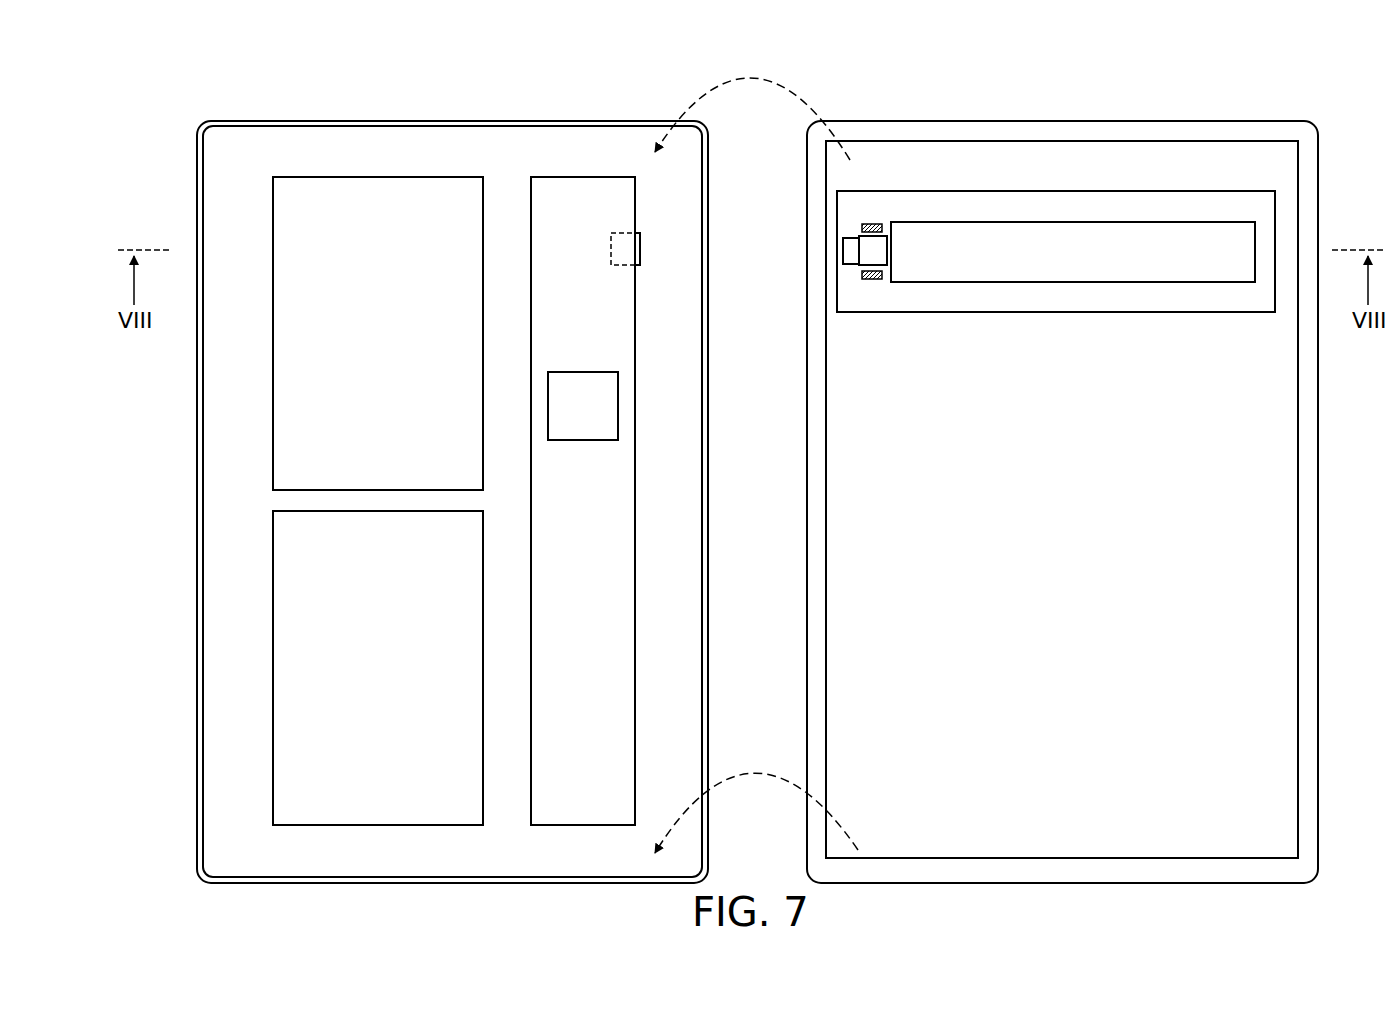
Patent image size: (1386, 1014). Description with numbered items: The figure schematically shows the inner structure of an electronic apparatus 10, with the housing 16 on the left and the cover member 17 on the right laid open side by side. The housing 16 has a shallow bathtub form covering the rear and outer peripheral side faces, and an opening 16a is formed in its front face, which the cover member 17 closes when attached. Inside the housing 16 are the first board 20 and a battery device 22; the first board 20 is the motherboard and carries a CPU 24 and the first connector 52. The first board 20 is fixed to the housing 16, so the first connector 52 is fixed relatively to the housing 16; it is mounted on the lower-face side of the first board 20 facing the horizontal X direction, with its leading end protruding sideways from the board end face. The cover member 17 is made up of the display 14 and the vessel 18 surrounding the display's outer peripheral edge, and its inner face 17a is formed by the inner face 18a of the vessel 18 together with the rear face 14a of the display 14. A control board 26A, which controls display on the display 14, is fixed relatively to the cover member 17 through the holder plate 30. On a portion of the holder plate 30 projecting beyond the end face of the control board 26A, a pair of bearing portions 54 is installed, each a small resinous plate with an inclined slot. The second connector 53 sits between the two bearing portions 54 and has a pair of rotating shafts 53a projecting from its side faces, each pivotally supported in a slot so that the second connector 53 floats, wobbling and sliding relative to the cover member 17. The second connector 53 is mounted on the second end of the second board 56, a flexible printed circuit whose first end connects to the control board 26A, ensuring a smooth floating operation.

The electronic apparatus 10 is at (150, 106).
The housing 16 is at (327, 112).
The opening 16a is at (426, 136).
The first board 20 is at (545, 176).
The battery device 22 is at (287, 522).
The CPU 24 is at (607, 410).
The first connector 52 is at (640, 241).
The cover member 17 is at (1062, 446).
The inner face of the cover member 17a is at (1062, 84).
The display 14 is at (1310, 70).
The rear face of the display 14a is at (1003, 160).
The vessel 18 is at (1280, 128).
The inner face of the vessel 18a is at (963, 70).
The holder plate 30 is at (1215, 305).
The control board 26A is at (1148, 270).
The second connector 53 is at (887, 258).
The rotating shaft 53a is at (877, 225).
The bearing portion 54 is at (880, 234).
The second board 56 is at (850, 250).